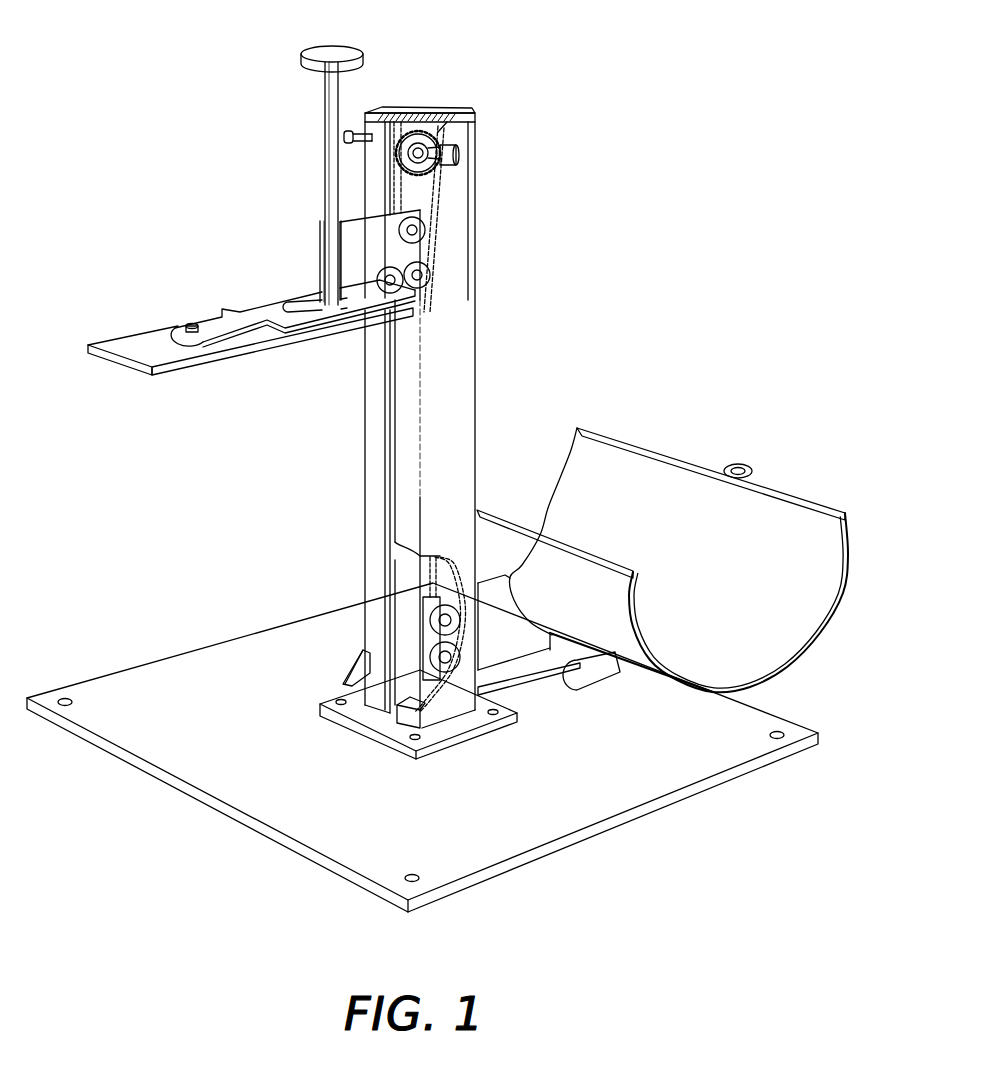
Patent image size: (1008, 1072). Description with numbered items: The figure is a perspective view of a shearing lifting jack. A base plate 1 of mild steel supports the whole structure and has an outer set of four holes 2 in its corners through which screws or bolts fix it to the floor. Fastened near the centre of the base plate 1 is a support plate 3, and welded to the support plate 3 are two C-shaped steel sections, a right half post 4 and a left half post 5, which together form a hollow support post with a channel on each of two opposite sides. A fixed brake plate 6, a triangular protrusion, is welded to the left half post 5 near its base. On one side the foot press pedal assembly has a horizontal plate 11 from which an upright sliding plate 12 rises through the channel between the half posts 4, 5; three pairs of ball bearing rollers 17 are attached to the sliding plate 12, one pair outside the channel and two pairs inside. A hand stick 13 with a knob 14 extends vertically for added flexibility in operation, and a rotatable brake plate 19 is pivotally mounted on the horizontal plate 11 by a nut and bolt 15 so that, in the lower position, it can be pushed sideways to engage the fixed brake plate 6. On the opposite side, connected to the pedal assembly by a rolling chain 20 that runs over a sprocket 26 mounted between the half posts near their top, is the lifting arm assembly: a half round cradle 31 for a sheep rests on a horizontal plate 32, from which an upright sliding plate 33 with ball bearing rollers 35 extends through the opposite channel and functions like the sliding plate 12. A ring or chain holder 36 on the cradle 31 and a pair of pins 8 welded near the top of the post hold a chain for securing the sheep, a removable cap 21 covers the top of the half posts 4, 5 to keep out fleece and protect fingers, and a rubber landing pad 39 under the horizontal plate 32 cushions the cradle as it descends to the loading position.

The base plate 1 is at (235, 793).
The holes 2 is at (400, 868).
The support plate 3 is at (443, 727).
The right half post 4 is at (460, 370).
The left half post 5 is at (372, 373).
The fixed brake plate 6 is at (347, 678).
The pins 8 is at (352, 130).
The horizontal plate 11 is at (138, 352).
The upright sliding plate 12 is at (382, 247).
The hand stick 13 is at (328, 182).
The knob 14 is at (318, 53).
The nut and bolt 15 is at (192, 324).
The ball bearing rollers 17 is at (423, 288).
The rotatable brake plate 19 is at (255, 308).
The rolling chain 20 is at (433, 192).
The removable cap 21 is at (452, 112).
The sprocket 26 is at (416, 130).
The cradle 31 is at (617, 480).
The horizontal plate 32 is at (513, 675).
The upright sliding plate 33 is at (507, 617).
The ball bearing rollers 35 is at (440, 622).
The ring or chain holder 36 is at (740, 465).
The rubber landing pad 39 is at (605, 665).